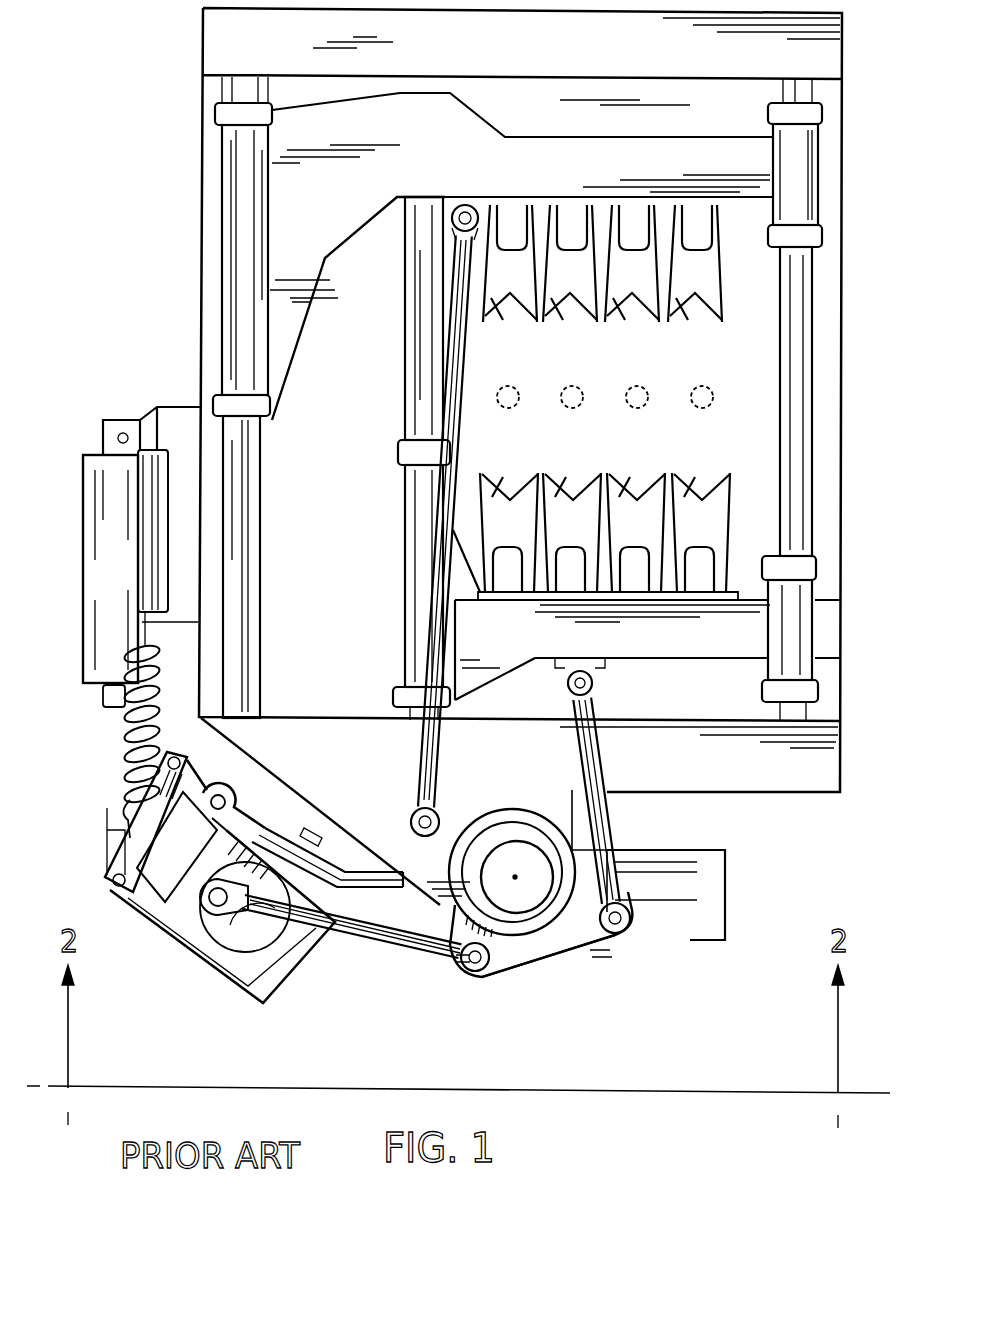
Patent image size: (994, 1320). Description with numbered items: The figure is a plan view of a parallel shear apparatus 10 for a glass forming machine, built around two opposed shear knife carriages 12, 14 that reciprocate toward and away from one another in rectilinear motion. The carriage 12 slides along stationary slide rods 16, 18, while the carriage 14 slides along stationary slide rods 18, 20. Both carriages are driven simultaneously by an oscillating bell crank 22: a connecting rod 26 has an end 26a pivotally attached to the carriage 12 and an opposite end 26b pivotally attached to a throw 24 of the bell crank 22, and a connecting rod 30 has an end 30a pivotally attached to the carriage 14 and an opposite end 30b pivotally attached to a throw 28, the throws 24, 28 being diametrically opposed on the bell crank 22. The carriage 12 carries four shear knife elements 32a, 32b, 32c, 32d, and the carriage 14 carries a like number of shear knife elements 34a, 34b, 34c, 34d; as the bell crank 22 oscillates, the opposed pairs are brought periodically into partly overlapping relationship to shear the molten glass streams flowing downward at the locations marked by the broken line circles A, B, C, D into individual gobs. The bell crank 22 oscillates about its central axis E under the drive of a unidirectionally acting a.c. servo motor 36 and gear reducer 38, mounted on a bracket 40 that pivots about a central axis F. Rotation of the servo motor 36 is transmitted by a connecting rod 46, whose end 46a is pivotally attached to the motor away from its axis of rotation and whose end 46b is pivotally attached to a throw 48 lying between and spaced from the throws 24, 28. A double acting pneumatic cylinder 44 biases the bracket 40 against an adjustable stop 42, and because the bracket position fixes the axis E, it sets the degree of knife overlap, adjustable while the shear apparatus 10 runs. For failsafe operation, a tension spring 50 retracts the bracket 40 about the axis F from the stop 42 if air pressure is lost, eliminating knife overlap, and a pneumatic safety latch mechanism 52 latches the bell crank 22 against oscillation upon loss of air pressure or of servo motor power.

The parallel shear apparatus 10 is at (120, 200).
The shear knife carriage 12 is at (632, 165).
The shear knife carriage 14 is at (698, 655).
The stationary slide rod 16 is at (252, 540).
The stationary slide rod 18 is at (800, 425).
The stationary slide rod 20 is at (412, 400).
The bell crank 22 is at (530, 935).
The throw 24 is at (486, 822).
The connecting rod 26 is at (455, 445).
The end of connecting rod 26a is at (458, 228).
The end of connecting rod 26b is at (432, 818).
The throw 28 is at (590, 932).
The connecting rod 30 is at (600, 803).
The end of connecting rod 30a is at (592, 686).
The end of connecting rod 30b is at (626, 930).
The shear knife element 32a is at (495, 320).
The shear knife element 32b is at (557, 320).
The shear knife element 32c is at (620, 320).
The shear knife element 32d is at (685, 320).
The shear knife element 34a is at (509, 519).
The shear knife element 34b is at (572, 519).
The shear knife element 34c is at (636, 519).
The shear knife element 34d is at (701, 519).
The a.c. servo motor 36 is at (265, 1005).
The gear reducer 38 is at (275, 955).
The bracket 40 is at (152, 915).
The adjustable stop 42 is at (318, 830).
The double acting pneumatic cylinder 44 is at (98, 548).
The connecting rod 46 is at (370, 940).
The end of connecting rod 46a is at (208, 905).
The end of connecting rod 46b is at (478, 972).
The throw 48 is at (500, 945).
The tension spring 50 is at (126, 806).
The pneumatic safety latch mechanism 52 is at (727, 930).
The shearing location A is at (517, 390).
The shearing location B is at (581, 390).
The shearing location C is at (646, 390).
The shearing location D is at (711, 390).
The central axis of bell crank E is at (515, 877).
The pivot axis of bracket F is at (228, 800).